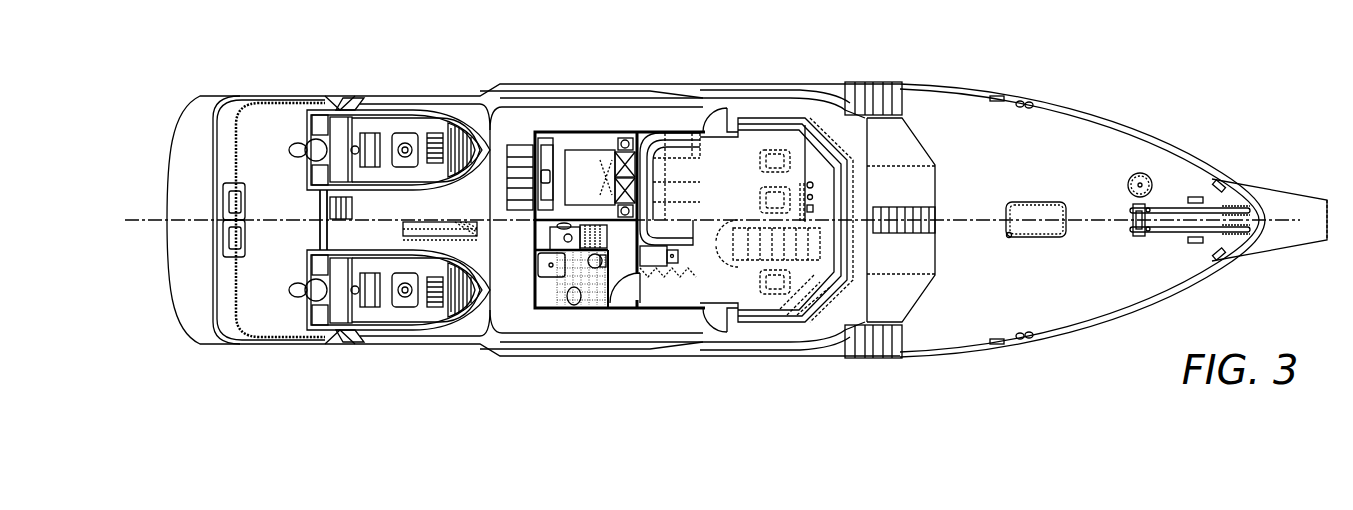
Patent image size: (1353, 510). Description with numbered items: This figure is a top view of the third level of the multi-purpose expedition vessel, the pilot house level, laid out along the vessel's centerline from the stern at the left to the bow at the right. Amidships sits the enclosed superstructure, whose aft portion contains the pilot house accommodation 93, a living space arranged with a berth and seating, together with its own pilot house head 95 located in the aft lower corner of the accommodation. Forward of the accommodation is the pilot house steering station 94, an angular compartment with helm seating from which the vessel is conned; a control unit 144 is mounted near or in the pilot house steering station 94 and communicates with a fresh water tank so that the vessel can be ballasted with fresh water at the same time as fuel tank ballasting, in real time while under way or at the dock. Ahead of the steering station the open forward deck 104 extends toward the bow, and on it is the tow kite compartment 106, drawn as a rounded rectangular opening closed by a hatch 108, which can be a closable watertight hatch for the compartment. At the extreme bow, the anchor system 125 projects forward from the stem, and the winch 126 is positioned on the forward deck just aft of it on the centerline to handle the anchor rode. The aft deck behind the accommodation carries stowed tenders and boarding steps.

The pilot house accommodation 93 is at (588, 172).
The pilot house steering station 94 is at (802, 197).
The control unit 144 is at (813, 181).
The pilot house head 95 is at (578, 292).
The forward deck 104 is at (1068, 168).
The tow kite compartment 106 is at (1027, 191).
The hatch 108 is at (1011, 238).
The anchor system 125 is at (1282, 210).
The winch 126 is at (1142, 237).